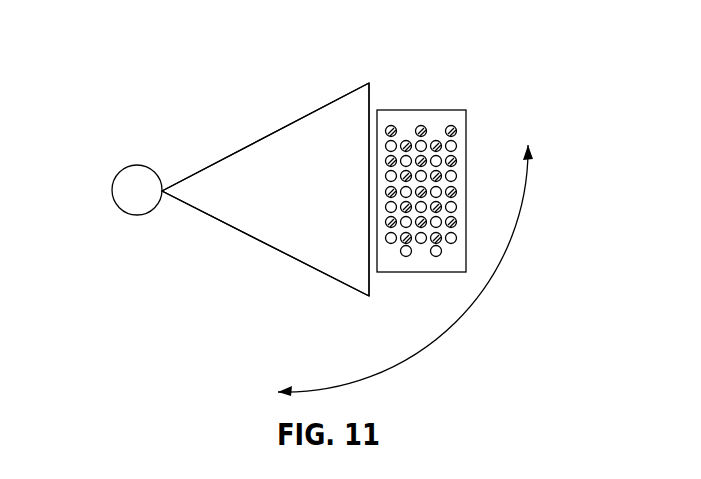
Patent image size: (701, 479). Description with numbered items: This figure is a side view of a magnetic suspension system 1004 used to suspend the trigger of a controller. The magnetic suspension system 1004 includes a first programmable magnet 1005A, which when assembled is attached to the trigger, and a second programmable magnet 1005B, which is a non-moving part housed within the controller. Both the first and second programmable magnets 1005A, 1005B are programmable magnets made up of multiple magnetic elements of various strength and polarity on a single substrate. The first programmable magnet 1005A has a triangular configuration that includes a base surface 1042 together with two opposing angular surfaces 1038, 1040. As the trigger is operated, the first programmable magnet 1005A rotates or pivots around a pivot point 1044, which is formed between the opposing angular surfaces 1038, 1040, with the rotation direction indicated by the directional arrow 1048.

The magnetic suspension system 1004 is at (393, 88).
The first programmable magnet 1005A is at (263, 168).
The second programmable magnet 1005B is at (460, 138).
The angular surface 1038 is at (283, 128).
The angular surface 1040 is at (258, 240).
The base surface 1042 is at (366, 186).
The pivot point 1044 is at (130, 198).
The directional arrow 1048 is at (493, 278).